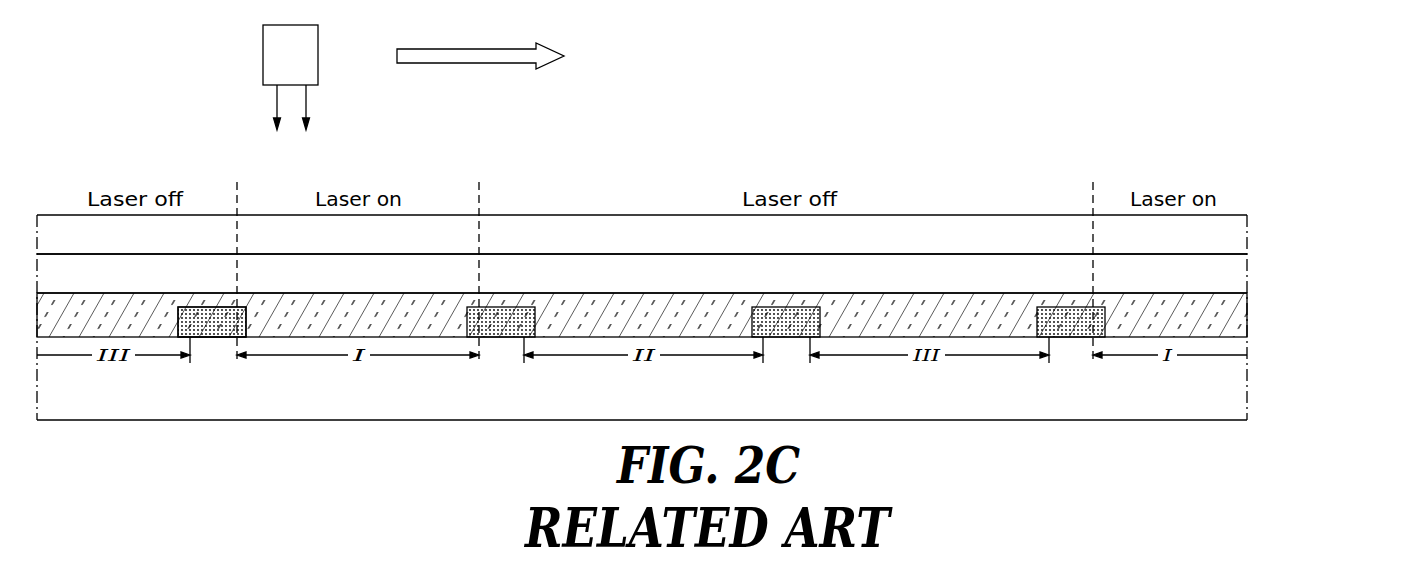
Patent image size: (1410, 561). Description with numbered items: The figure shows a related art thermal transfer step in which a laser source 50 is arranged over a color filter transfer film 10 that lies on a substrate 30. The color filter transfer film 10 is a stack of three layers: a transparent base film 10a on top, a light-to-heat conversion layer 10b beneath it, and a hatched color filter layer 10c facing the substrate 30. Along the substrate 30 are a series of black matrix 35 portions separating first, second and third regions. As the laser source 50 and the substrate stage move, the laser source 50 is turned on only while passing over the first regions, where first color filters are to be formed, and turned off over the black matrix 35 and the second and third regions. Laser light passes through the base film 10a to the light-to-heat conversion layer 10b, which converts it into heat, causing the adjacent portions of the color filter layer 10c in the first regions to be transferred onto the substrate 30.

The color filter transfer film 10 is at (712, 276).
The base film 10a is at (1235, 232).
The light-to-heat conversion (LTHC) layer 10b is at (1235, 272).
The color filter layer 10c is at (1235, 312).
The substrate 30 is at (652, 403).
The black matrix 35 is at (1073, 338).
The laser source 50 is at (273, 53).